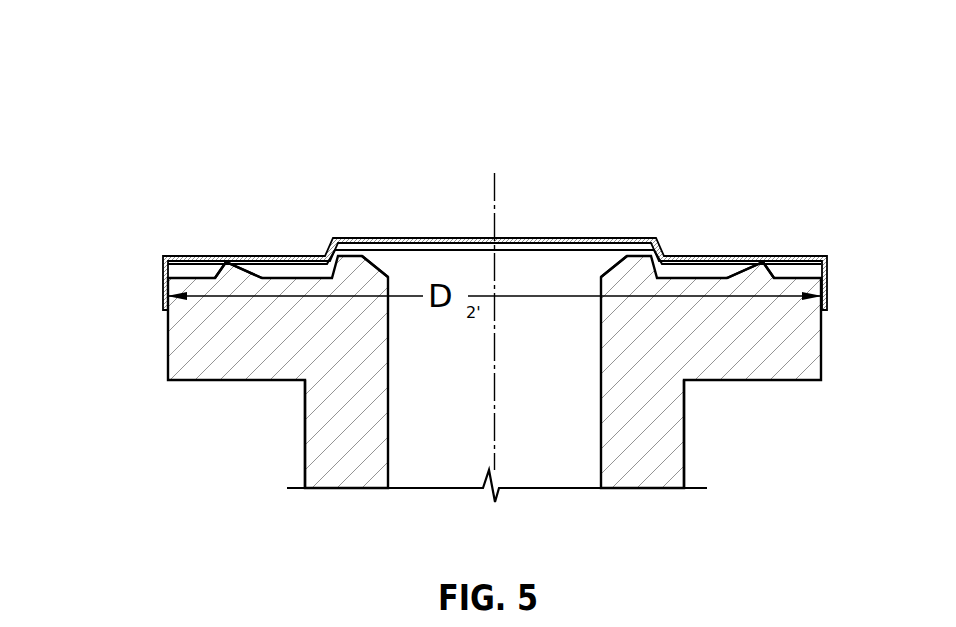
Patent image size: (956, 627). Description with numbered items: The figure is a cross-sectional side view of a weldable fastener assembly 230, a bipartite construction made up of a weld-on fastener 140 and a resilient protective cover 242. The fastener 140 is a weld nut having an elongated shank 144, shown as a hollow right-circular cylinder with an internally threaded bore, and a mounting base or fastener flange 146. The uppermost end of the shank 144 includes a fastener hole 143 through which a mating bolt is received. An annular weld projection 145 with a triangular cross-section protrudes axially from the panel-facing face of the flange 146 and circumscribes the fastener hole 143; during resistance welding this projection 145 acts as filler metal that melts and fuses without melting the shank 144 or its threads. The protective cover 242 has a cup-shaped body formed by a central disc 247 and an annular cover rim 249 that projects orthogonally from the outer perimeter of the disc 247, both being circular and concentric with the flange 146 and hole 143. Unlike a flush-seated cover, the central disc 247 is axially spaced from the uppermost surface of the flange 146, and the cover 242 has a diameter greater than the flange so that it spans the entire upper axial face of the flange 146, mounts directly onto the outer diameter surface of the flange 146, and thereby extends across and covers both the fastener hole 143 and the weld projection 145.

The weld-on fastener 140 is at (445, 337).
The fastener hole 143 is at (610, 269).
The shank 144 is at (305, 462).
The annular weld projection 145 is at (231, 262).
The fastener flange 146 is at (168, 340).
The weldable fastener assembly 230 is at (449, 177).
The resilient protective cover 242 is at (474, 155).
The central disc 247 is at (438, 238).
The annular cover rim 249 is at (163, 280).